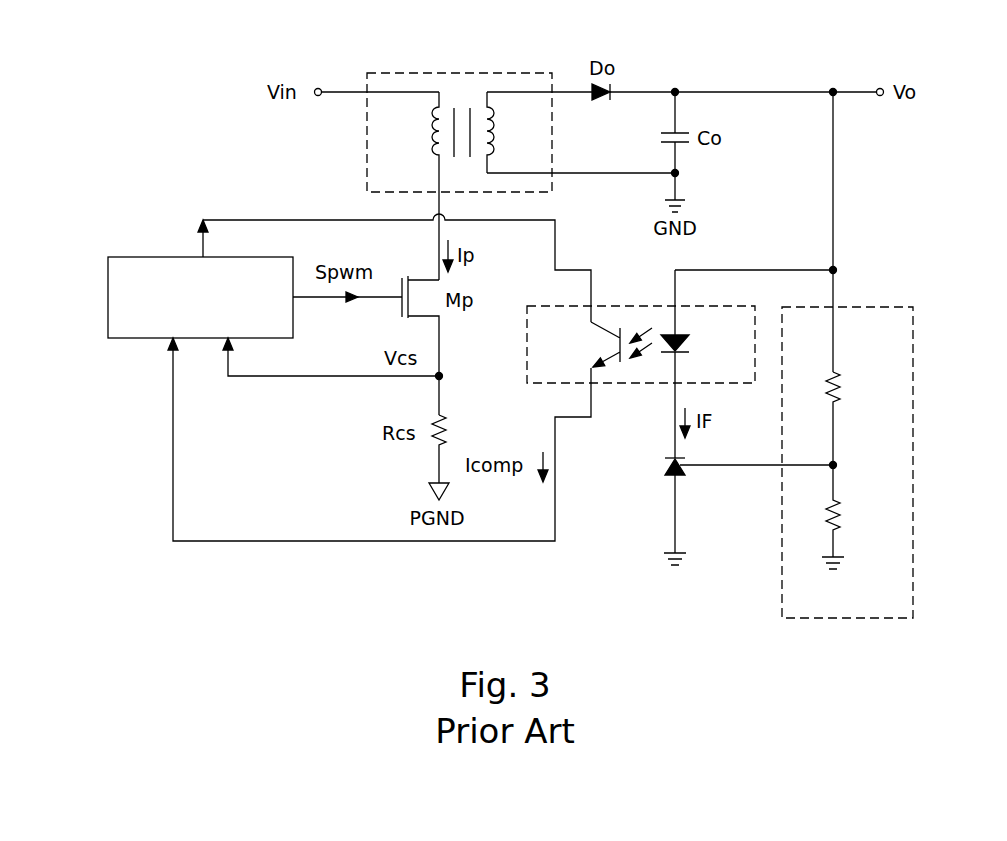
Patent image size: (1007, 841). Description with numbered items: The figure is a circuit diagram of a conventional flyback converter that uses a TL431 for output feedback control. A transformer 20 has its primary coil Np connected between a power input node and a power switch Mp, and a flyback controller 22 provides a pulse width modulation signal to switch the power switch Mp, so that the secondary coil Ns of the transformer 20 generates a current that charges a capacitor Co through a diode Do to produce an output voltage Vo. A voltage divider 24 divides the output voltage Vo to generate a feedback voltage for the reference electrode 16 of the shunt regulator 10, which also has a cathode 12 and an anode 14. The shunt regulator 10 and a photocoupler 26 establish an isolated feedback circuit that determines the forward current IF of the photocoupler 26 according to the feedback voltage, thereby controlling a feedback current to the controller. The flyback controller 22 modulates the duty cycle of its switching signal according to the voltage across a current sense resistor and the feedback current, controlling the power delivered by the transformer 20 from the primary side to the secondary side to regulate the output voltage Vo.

The shunt regulator 10 is at (666, 468).
The cathode 12 is at (672, 445).
The anode 14 is at (672, 488).
The reference electrode 16 is at (698, 468).
The transformer 20 is at (457, 72).
The flyback controller 22 is at (108, 297).
The voltage divider 24 is at (913, 452).
The photocoupler 26 is at (633, 305).